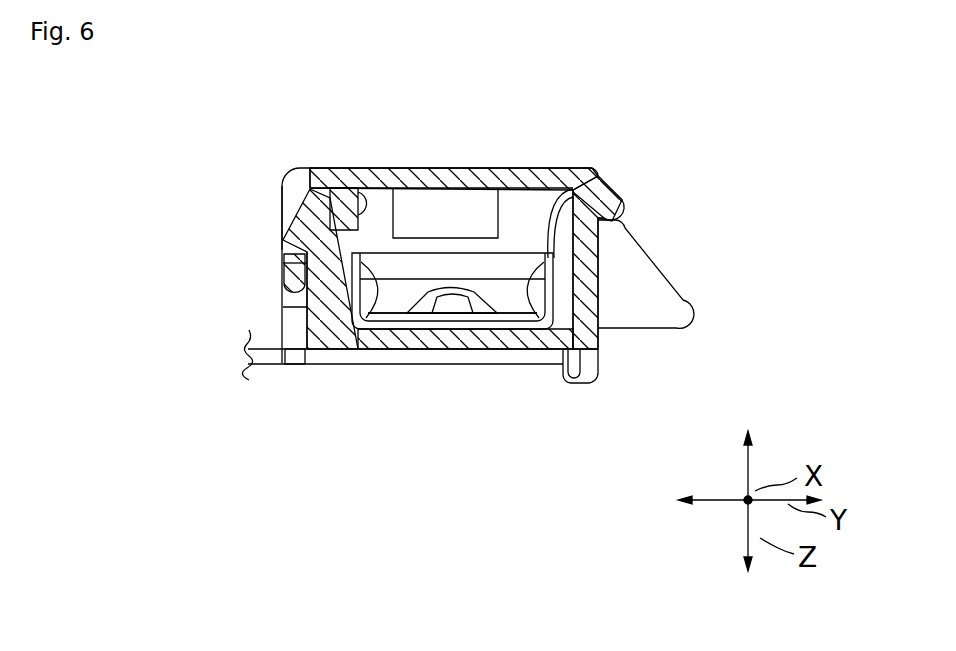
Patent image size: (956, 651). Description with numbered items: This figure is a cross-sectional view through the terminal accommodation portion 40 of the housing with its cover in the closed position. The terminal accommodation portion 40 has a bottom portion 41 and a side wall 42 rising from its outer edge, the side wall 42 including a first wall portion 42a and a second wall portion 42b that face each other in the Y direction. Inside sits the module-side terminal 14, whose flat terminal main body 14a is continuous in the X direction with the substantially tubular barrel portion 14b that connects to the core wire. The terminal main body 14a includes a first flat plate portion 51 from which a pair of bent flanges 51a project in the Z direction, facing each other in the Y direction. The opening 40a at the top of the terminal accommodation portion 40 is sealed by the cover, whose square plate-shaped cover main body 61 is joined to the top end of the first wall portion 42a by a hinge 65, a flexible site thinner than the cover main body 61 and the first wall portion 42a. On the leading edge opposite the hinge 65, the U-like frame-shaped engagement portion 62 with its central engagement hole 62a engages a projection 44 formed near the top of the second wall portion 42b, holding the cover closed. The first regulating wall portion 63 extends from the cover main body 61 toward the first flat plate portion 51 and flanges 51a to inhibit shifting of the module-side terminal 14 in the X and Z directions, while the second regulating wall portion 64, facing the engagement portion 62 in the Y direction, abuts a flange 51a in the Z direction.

The module-side terminal 14 is at (471, 278).
The terminal main body 14a is at (411, 318).
The barrel portion 14b is at (457, 278).
The terminal accommodation portion 40 is at (598, 267).
The opening 40a is at (600, 192).
The bottom portion 41 is at (527, 338).
The side wall 42 is at (581, 385).
The first wall portion 42a is at (598, 293).
The second wall portion 42b is at (284, 307).
The projection 44 is at (295, 239).
The first flat plate portion 51 is at (463, 322).
The flange 51a is at (361, 322).
The cover main body 61 is at (432, 170).
The engagement portion 62 is at (284, 273).
The engagement hole 62a is at (290, 196).
The first regulating wall portion 63 is at (518, 254).
The second regulating wall portion 64 is at (363, 190).
The hinge 65 is at (628, 203).